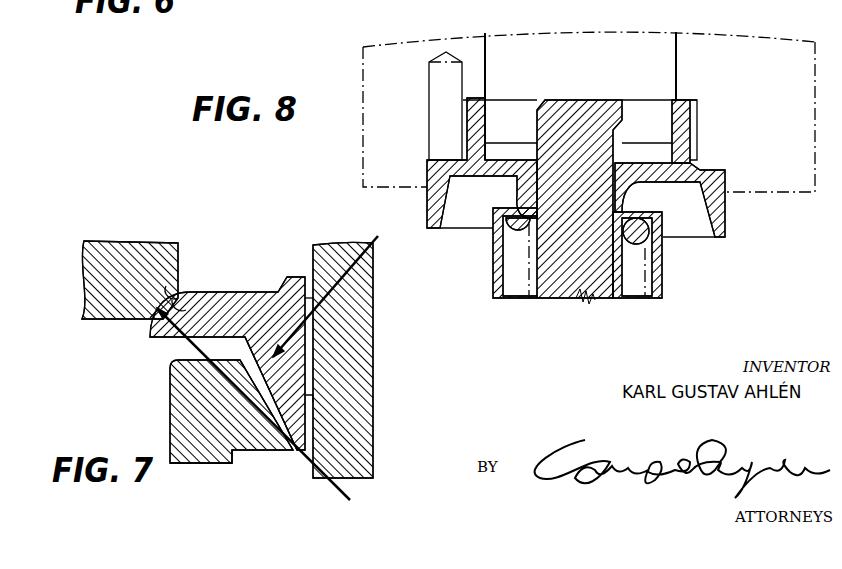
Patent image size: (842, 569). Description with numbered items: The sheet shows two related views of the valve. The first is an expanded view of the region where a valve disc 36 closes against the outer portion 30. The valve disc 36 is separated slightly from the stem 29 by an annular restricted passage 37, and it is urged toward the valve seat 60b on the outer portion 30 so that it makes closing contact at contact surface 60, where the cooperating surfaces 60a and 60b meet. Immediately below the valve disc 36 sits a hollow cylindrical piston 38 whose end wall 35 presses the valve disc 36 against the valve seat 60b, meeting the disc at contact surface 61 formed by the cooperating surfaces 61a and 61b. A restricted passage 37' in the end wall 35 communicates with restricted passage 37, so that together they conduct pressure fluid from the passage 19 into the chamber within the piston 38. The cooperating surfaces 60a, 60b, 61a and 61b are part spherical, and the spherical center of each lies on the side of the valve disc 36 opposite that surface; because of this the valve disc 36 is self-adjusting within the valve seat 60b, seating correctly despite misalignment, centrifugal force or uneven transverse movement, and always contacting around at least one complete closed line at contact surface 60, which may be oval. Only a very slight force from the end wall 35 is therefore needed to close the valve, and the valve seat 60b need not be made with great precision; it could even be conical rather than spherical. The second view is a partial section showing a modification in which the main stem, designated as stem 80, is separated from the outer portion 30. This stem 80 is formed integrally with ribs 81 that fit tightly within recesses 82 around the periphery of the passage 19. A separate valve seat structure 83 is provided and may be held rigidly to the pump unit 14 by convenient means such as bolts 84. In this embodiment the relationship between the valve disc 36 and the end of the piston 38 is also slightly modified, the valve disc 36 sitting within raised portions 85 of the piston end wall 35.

In FIG. 8, the pump unit 14 is at (373, 73).
In FIG. 8, the passage 19 is at (643, 60).
In FIG. 8, the bolts 84 is at (432, 84).
In FIG. 8, the recesses 82 is at (678, 97).
In FIG. 8, the stem 80 is at (597, 112).
In FIG. 8, the ribs 81 is at (660, 128).
In FIG. 8, the valve seat structure 83 is at (703, 164).
In FIG. 8, the valve disc 36 is at (482, 182).
In FIG. 7, the valve disc 36 is at (244, 302).
In FIG. 8, the end wall 35 is at (513, 207).
In FIG. 7, the end wall 35 is at (185, 438).
In FIG. 8, the raised portions 85 is at (633, 187).
In FIG. 8, the piston 38 is at (662, 268).
In FIG. 7, the outer portion 30 is at (102, 290).
In FIG. 7, the contact surface 60 is at (152, 316).
In FIG. 7, the cooperating surface 60a is at (172, 306).
In FIG. 7, the valve seat 60b is at (170, 290).
In FIG. 7, the restricted passage 37 is at (296, 271).
In FIG. 7, the restricted passage 37' is at (288, 438).
In FIG. 7, the stem 29 is at (373, 352).
In FIG. 7, the contact surface 61 is at (215, 381).
In FIG. 7, the cooperating surface 61a is at (246, 343).
In FIG. 7, the cooperating surface 61b is at (272, 383).